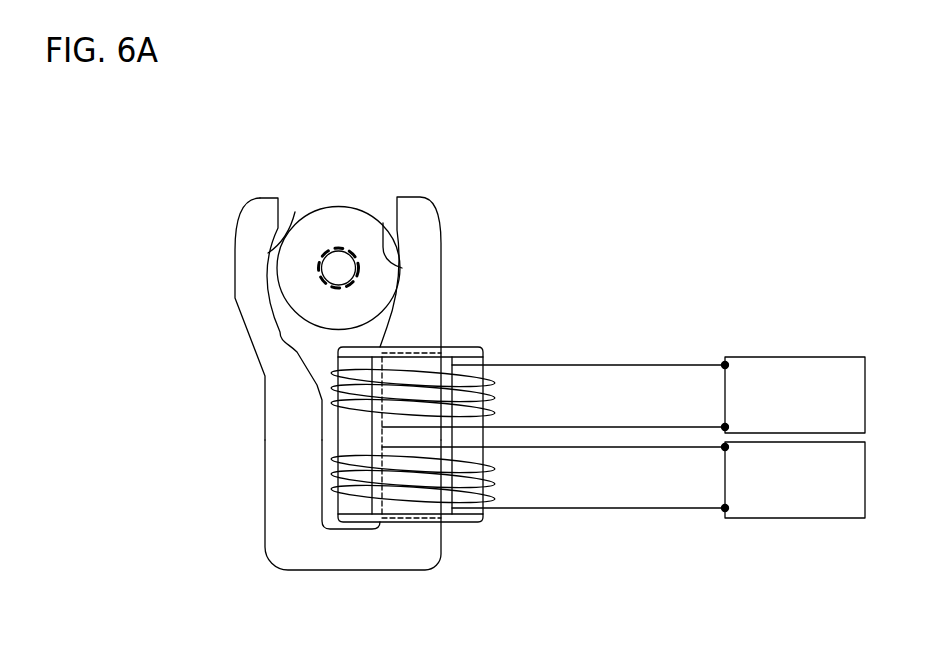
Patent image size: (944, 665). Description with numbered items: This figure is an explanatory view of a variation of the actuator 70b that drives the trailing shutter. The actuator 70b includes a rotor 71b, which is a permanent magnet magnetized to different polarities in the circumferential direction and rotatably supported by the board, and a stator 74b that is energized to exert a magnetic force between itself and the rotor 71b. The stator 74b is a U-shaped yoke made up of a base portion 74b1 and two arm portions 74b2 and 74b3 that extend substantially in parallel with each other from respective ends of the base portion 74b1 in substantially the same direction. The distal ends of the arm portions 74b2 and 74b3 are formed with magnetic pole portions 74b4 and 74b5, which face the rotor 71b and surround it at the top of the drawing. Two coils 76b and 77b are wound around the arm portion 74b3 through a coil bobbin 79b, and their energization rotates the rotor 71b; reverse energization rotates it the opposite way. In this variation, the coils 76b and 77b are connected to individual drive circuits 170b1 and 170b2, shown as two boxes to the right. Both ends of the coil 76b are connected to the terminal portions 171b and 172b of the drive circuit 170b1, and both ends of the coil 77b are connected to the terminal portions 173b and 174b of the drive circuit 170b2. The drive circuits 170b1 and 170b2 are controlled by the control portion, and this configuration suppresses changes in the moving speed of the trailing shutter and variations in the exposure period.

The actuator 70b is at (199, 282).
The rotor 71b is at (349, 232).
The stator 74b is at (261, 475).
The base portion 74b1 is at (348, 545).
The arm portion 74b2 is at (285, 413).
The arm portion 74b3 is at (425, 323).
The magnetic pole portion 74b4 is at (293, 210).
The magnetic pole portion 74b5 is at (383, 222).
The coil 76b is at (573, 363).
The coil 77b is at (573, 511).
The coil bobbin 79b is at (476, 523).
The drive circuit 170b1 is at (800, 356).
The drive circuit 170b2 is at (800, 519).
The terminal portion 171b is at (725, 363).
The terminal portion 172b is at (723, 426).
The terminal portion 173b is at (723, 448).
The terminal portion 174b is at (725, 510).